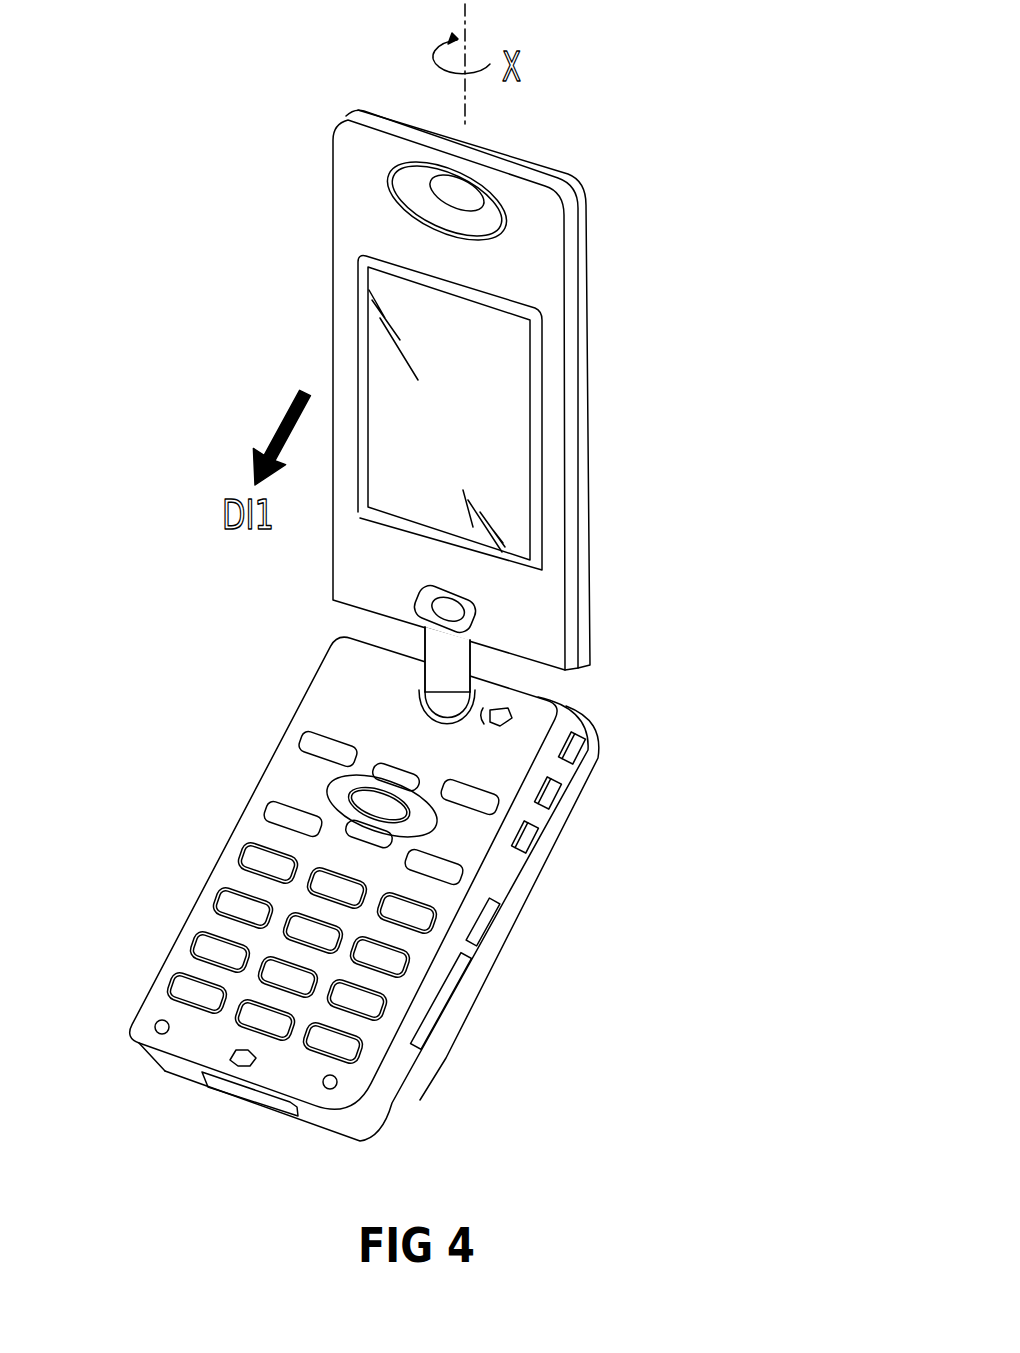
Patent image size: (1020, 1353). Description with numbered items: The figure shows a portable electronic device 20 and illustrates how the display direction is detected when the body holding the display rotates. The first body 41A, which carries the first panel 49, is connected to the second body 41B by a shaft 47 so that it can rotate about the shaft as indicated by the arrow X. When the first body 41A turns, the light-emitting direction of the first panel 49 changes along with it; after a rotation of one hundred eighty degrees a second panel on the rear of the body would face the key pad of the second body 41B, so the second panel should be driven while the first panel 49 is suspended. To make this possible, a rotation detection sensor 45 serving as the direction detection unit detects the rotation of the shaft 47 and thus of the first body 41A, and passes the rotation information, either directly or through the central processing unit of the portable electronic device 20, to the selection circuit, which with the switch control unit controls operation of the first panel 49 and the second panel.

The portable electronic device 20 is at (750, 122).
The first body 41A is at (547, 277).
The second body 41B is at (250, 827).
The rotation detection sensor 45 is at (513, 713).
The shaft 47 is at (463, 669).
The first panel 49 is at (493, 468).